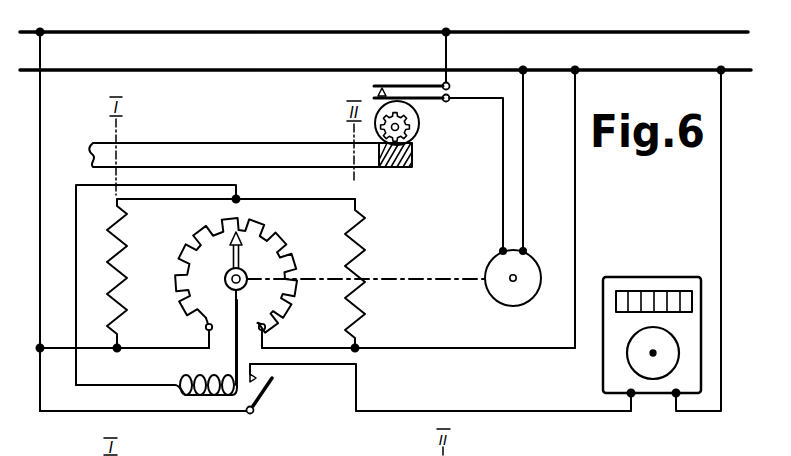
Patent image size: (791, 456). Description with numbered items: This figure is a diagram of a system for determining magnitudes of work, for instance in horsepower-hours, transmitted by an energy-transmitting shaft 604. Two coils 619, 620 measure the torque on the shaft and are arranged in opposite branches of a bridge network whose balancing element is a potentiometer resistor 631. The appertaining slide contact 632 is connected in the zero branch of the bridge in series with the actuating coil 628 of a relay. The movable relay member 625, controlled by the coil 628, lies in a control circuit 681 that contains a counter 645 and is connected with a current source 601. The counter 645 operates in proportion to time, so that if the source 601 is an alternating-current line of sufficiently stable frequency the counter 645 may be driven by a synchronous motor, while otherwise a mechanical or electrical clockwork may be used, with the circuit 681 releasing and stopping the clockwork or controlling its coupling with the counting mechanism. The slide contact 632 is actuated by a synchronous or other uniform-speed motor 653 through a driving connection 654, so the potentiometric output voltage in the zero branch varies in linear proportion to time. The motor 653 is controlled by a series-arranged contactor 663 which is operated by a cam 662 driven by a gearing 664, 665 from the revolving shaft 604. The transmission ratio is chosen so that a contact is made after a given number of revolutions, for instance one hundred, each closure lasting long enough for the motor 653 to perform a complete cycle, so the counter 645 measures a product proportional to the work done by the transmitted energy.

The current source 601 is at (242, 70).
The energy-transmitting shaft 604 is at (217, 152).
The coil 619 is at (127, 249).
The coil 620 is at (347, 240).
The movable relay member 625 is at (272, 386).
The actuating coil 628 is at (209, 380).
The potentiometer resistor 631 is at (186, 313).
The slide contact 632 is at (232, 240).
The counter 645 is at (643, 282).
The motor 653 is at (497, 291).
The driving connection 654 is at (437, 277).
The cam 662 is at (414, 112).
The contactor 663 is at (372, 89).
The gearing 664 is at (413, 165).
The gearing 665 is at (411, 133).
The control circuit 681 is at (487, 413).